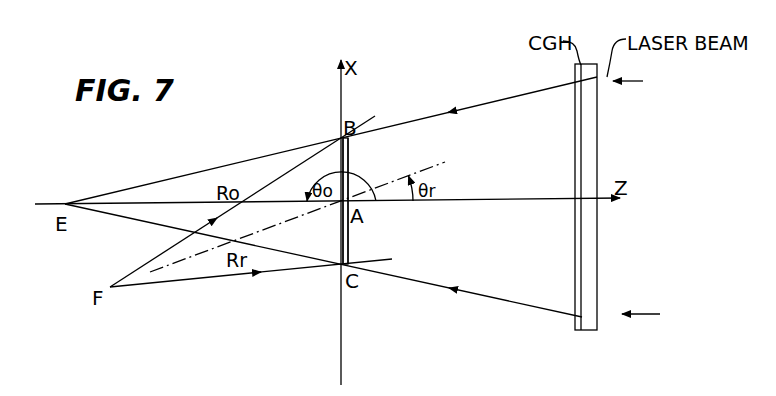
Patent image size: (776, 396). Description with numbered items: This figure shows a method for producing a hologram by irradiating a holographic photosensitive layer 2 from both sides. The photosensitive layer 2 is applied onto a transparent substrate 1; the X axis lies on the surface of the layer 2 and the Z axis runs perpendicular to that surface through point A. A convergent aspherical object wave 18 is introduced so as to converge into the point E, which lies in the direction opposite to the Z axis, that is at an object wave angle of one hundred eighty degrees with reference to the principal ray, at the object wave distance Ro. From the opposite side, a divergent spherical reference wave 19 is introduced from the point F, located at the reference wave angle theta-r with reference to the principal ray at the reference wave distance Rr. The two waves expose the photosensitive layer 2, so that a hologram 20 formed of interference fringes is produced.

The transparent substrate 1 is at (356, 201).
The holographic photosensitive layer 2 is at (343, 216).
The hologram 20 is at (343, 243).
The convergent aspherical object wave 18 is at (243, 161).
The divergent spherical reference wave 19 is at (247, 276).